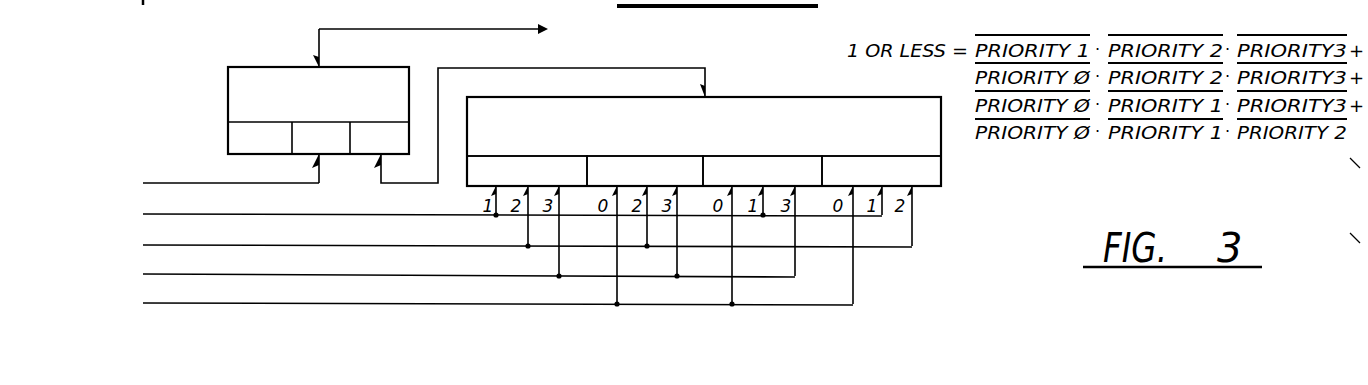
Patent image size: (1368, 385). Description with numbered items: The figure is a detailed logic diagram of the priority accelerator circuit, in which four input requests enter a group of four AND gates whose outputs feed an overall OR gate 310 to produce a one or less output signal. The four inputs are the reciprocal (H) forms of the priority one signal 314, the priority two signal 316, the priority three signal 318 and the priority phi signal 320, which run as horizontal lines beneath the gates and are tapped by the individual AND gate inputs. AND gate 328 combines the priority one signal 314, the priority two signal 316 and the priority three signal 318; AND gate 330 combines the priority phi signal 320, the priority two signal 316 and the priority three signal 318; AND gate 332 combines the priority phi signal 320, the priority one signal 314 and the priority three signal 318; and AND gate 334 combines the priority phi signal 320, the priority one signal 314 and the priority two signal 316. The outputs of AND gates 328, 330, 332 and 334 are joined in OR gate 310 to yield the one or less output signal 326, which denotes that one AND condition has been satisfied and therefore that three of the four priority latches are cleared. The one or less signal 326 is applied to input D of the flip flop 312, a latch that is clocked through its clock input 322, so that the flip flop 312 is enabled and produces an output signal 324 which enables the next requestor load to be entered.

The OR gate 310 is at (797, 98).
The flip flop 312 is at (236, 66).
The priority 1 signal 314 is at (780, 219).
The priority 2 signal 316 is at (912, 236).
The priority 3 signal 318 is at (795, 268).
The priority phi signal 320 is at (853, 288).
The clock input line 322 is at (321, 168).
The output signal 324 is at (318, 33).
The one or less output signal 326 is at (708, 73).
The AND gate 328 is at (493, 155).
The AND gate 330 is at (595, 155).
The AND gate 332 is at (718, 155).
The AND gate 334 is at (838, 155).